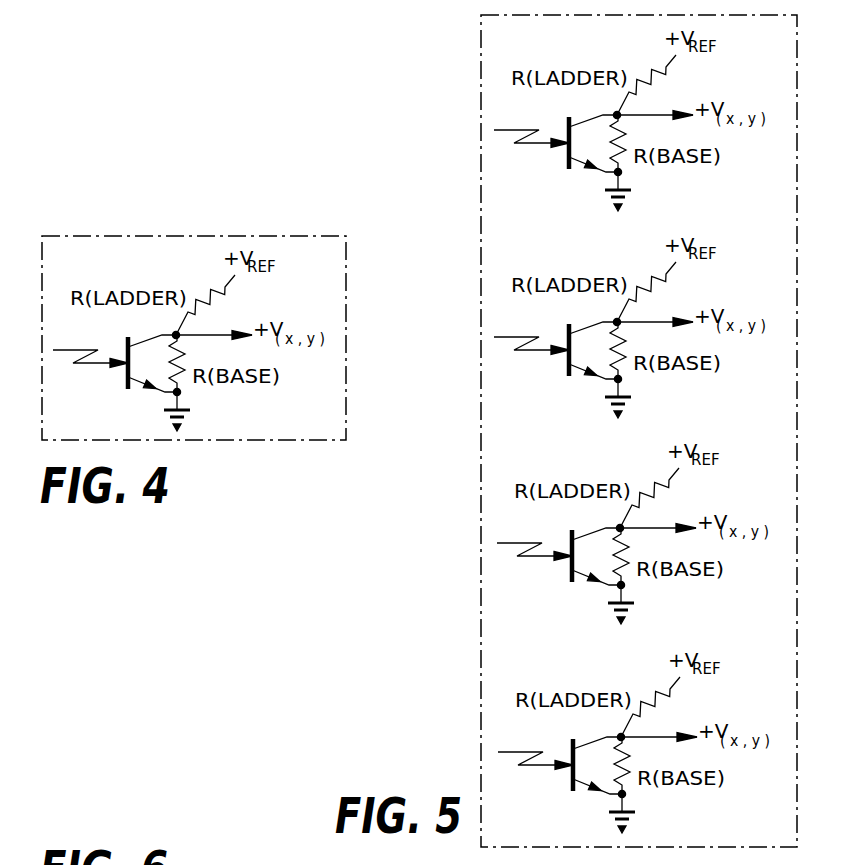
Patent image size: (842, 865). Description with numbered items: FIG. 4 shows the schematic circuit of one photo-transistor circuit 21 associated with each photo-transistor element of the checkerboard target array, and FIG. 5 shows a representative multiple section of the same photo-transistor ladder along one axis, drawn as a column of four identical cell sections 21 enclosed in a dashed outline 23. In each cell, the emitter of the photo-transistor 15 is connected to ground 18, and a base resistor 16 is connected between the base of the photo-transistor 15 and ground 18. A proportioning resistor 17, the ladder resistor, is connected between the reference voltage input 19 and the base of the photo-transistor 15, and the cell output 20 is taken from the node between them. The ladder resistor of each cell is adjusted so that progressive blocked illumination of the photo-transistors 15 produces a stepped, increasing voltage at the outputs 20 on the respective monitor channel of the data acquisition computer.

In FIG. 4, the photo-transistor 15 is at (117, 369).
In FIG. 5, the photo-transistor 15 is at (560, 460).
In FIG. 4, the base resistor 16 is at (199, 382).
In FIG. 5, the base resistor 16 is at (642, 473).
In FIG. 4, the proportioning resistor 17 is at (205, 298).
In FIG. 5, the proportioning resistor 17 is at (660, 396).
In FIG. 4, the ground 18 is at (155, 411).
In FIG. 5, the ground 18 is at (598, 502).
In FIG. 4, the reference voltage input 19 is at (269, 289).
In FIG. 5, the reference voltage input 19 is at (686, 371).
In FIG. 4, the cell output 20 is at (223, 319).
In FIG. 5, the cell output 20 is at (677, 402).
In FIG. 4, the photo-transistor circuit 21 is at (217, 338).
In FIG. 5, the column of transistor cells 23 is at (616, 431).